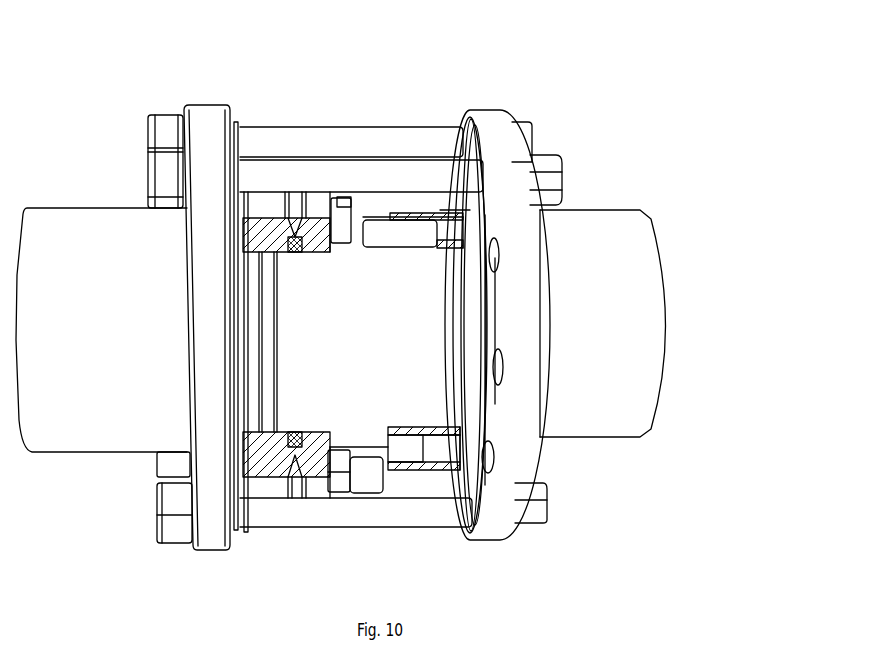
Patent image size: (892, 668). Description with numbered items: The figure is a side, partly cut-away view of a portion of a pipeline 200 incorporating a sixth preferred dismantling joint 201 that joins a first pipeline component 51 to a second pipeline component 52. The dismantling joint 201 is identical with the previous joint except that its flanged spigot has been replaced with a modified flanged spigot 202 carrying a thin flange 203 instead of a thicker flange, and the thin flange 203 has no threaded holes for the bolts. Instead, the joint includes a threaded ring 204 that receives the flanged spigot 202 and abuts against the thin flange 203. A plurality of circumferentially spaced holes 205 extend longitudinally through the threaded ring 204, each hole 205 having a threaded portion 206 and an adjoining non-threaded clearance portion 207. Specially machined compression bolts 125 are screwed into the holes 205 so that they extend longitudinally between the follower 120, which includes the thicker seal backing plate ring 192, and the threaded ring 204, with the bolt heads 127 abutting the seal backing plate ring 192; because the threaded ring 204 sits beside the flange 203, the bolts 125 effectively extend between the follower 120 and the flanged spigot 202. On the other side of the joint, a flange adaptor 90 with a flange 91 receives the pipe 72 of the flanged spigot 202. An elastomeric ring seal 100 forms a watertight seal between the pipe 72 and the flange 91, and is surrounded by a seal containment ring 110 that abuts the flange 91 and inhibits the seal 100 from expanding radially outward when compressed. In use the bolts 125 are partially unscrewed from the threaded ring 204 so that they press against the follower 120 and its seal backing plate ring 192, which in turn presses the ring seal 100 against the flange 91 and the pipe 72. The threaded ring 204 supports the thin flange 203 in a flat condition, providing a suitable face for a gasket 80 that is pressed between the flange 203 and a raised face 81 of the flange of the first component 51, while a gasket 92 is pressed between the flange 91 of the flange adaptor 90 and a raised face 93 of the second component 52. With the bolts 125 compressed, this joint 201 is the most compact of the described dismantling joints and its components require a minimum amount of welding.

The pipeline 200 is at (582, 131).
The dismantling joint 201 is at (499, 104).
The modified flanged spigot 202 is at (463, 407).
The thin flange 203 is at (473, 322).
The threaded ring 204 is at (430, 210).
The holes 205 is at (433, 424).
The threaded portion 206 is at (408, 450).
The non-threaded clearance portion 207 is at (436, 476).
The first pipeline component 51 is at (613, 206).
The second pipeline component 52 is at (55, 206).
The pipe 72 is at (355, 342).
The gasket 80 is at (487, 403).
The raised face 81 is at (487, 340).
The flange adaptor 90 is at (263, 210).
The flange 91 is at (318, 456).
The gasket 92 is at (250, 380).
The raised face 93 is at (243, 418).
The elastomeric ring seal 100 is at (293, 437).
The seal containment ring 110 is at (292, 490).
The follower 120 is at (314, 210).
The compression bolt 125 is at (394, 232).
The bolt head 127 is at (350, 240).
The seal backing plate ring 192 is at (330, 200).